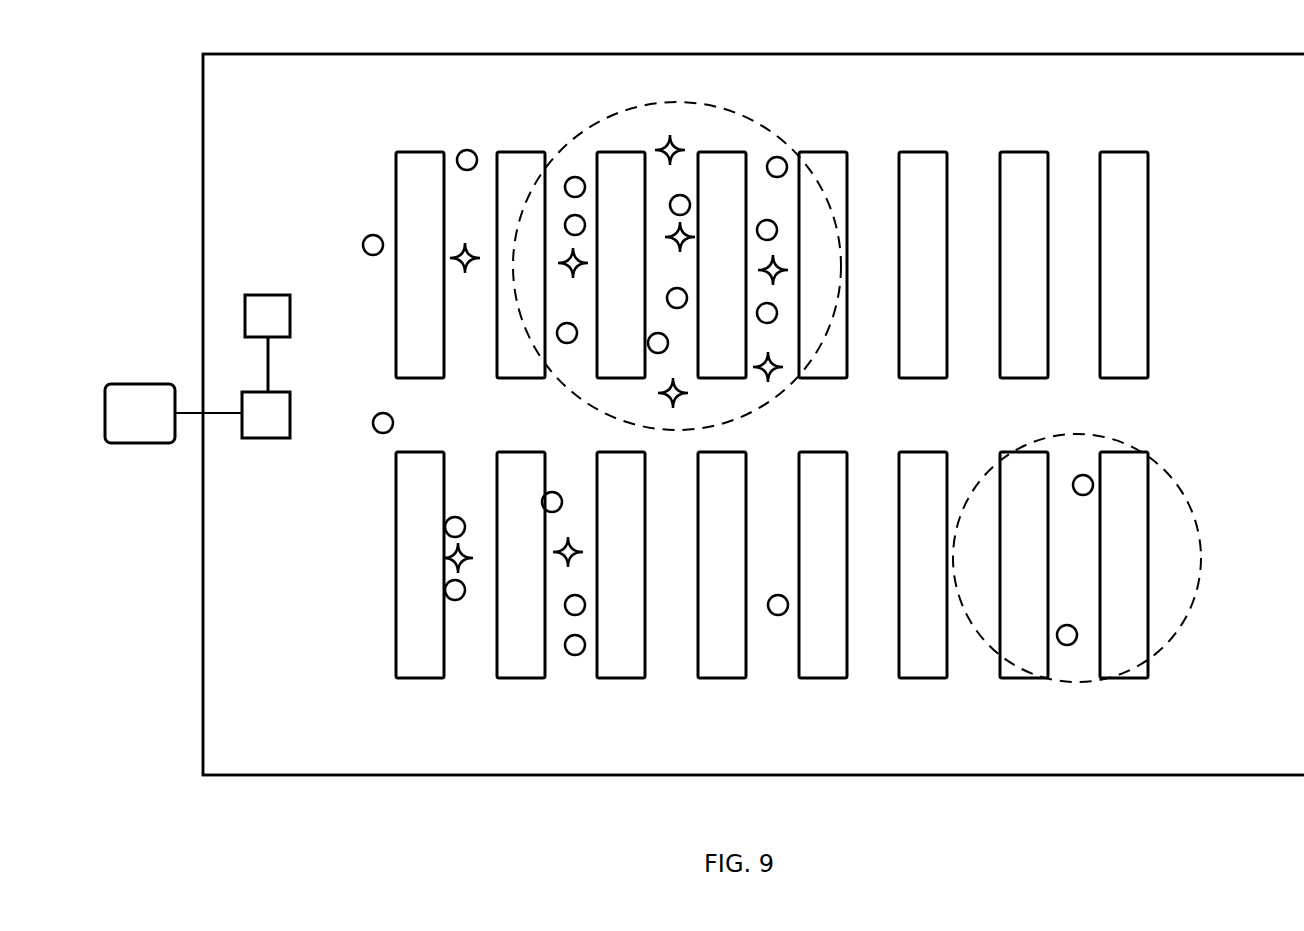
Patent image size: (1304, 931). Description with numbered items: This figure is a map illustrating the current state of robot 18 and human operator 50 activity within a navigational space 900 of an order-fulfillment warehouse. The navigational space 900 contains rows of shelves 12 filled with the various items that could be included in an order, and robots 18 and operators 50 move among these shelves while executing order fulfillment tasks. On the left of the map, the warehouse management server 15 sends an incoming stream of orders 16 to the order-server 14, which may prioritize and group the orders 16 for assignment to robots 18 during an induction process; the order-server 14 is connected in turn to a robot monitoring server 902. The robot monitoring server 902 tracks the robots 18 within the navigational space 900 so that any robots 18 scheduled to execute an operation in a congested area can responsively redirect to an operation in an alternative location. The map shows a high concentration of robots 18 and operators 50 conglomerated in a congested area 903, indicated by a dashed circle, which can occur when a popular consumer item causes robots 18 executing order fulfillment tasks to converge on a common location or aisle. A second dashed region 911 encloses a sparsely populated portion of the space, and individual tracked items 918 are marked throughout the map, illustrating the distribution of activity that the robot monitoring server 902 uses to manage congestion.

The navigational space 900 is at (320, 148).
The robot monitoring server 902 is at (266, 293).
The congested area 903 is at (783, 140).
The second zone 911 is at (1160, 466).
The item 918 is at (573, 176).
The robot 18 is at (362, 245).
The human operator 50 is at (465, 275).
The orders 16 is at (218, 412).
The warehouse management server 15 is at (141, 444).
The order-server 14 is at (265, 439).
The shelves 12 is at (396, 602).